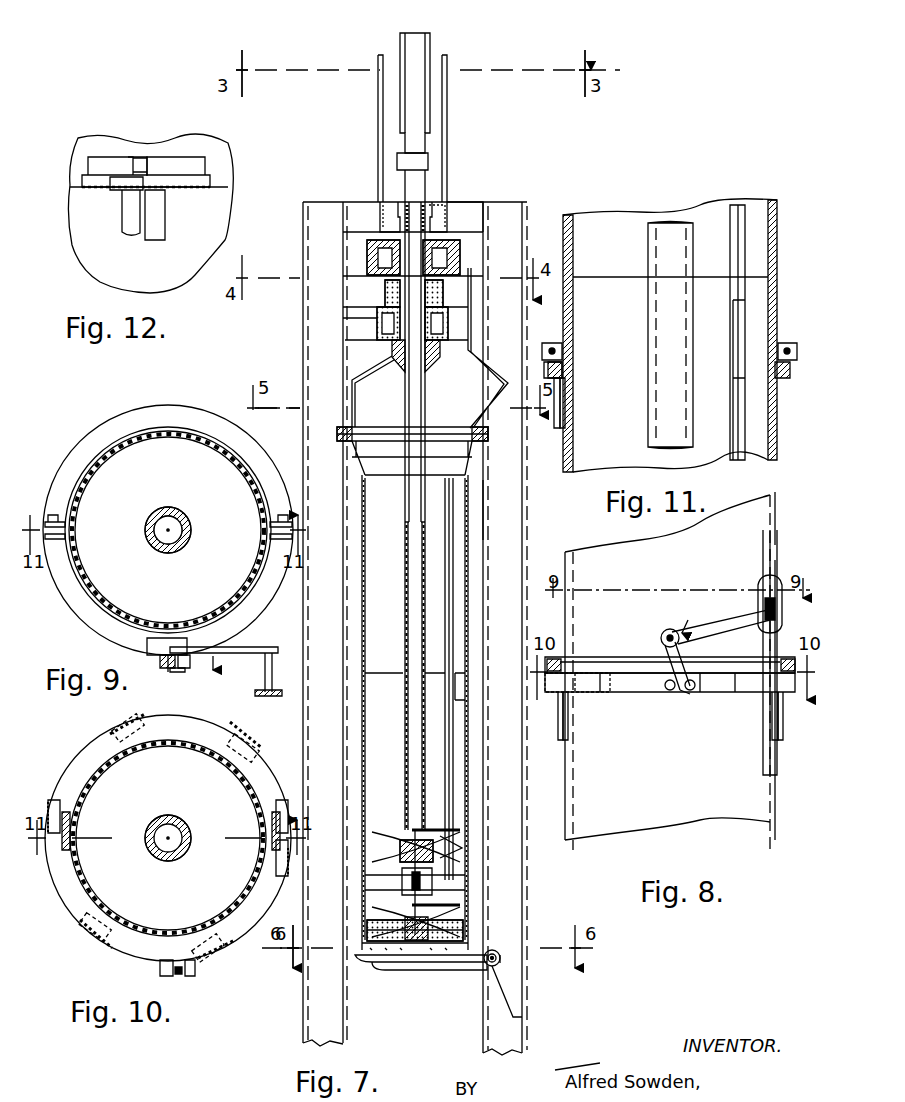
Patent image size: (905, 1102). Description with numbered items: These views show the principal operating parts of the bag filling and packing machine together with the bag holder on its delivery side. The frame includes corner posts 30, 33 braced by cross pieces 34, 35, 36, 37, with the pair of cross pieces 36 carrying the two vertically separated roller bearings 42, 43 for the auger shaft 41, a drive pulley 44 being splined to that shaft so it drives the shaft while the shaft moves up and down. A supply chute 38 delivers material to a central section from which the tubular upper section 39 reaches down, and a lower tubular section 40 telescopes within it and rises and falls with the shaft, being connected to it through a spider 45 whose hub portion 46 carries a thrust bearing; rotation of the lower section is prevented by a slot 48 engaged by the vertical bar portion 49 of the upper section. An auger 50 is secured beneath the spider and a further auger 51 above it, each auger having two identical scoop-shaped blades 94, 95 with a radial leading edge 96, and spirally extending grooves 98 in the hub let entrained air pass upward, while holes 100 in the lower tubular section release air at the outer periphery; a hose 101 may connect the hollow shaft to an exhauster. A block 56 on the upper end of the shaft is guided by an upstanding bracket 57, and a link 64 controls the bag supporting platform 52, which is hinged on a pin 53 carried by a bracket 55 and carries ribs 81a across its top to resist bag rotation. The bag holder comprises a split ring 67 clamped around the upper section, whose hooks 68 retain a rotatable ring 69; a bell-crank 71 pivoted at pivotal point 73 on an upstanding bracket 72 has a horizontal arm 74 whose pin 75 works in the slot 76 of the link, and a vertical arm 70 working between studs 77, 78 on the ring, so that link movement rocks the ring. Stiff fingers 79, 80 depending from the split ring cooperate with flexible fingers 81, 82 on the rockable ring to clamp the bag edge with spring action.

In FIG. 7, the corner post 30 is at (343, 325).
In FIG. 7, the corner post 33 is at (506, 508).
In FIG. 7, the cross piece 34 is at (470, 212).
In FIG. 7, the cross piece 35 is at (355, 318).
In FIG. 7, the cross piece 36 is at (447, 220).
In FIG. 7, the cross piece 37 is at (448, 325).
In FIG. 7, the supply chute 38 is at (430, 348).
In FIG. 7, the tubular upper section 39 is at (468, 568).
In FIG. 12, the tubular upper section 39 is at (85, 145).
In FIG. 9, the tubular upper section 39 is at (90, 597).
In FIG. 11, the tubular upper section 39 is at (777, 240).
In FIG. 8, the tubular upper section 39 is at (610, 552).
In FIG. 7, the lower tubular section 40 is at (466, 770).
In FIG. 12, the lower tubular section 40 is at (85, 258).
In FIG. 9, the lower tubular section 40 is at (88, 575).
In FIG. 10, the lower tubular section 40 is at (80, 852).
In FIG. 11, the lower tubular section 40 is at (772, 438).
In FIG. 8, the lower tubular section 40 is at (735, 812).
In FIG. 7, the auger shaft 41 is at (405, 413).
In FIG. 9, the auger shaft 41 is at (145, 530).
In FIG. 10, the auger shaft 41 is at (192, 826).
In FIG. 11, the auger shaft 41 is at (652, 396).
In FIG. 7, the roller bearing 42 is at (385, 298).
In FIG. 7, the roller bearing 43 is at (392, 360).
In FIG. 7, the drive pulley 44 is at (462, 258).
In FIG. 7, the spider 45 is at (455, 880).
In FIG. 7, the hub portion 46 is at (402, 882).
In FIG. 7, the slot 48 is at (447, 740).
In FIG. 9, the slot 48 is at (232, 465).
In FIG. 10, the slot 48 is at (232, 770).
In FIG. 11, the slot 48 is at (745, 405).
In FIG. 7, the vertical bar portion 49 is at (447, 650).
In FIG. 11, the vertical bar portion 49 is at (745, 232).
In FIG. 7, the auger 50 is at (465, 920).
In FIG. 7, the further auger 51 is at (460, 840).
In FIG. 7, the bag supporting platform 52 is at (388, 975).
In FIG. 7, the transverse hinge or pin 53 is at (500, 962).
In FIG. 7, the bracket 55 is at (508, 990).
In FIG. 7, the block 56 is at (397, 163).
In FIG. 7, the upstanding bracket 57 is at (447, 125).
In FIG. 9, the link 64 is at (262, 694).
In FIG. 8, the link 64 is at (763, 752).
In FIG. 12, the split ring 67 is at (195, 160).
In FIG. 9, the split ring 67 is at (88, 457).
In FIG. 11, the split ring 67 is at (790, 343).
In FIG. 8, the split ring 67 is at (608, 657).
In FIG. 12, the hook 68 is at (118, 190).
In FIG. 10, the hook 68 is at (120, 718).
In FIG. 11, the hook 68 is at (556, 366).
In FIG. 8, the hook 68 is at (598, 692).
In FIG. 12, the rotatable ring 69 is at (98, 185).
In FIG. 10, the rotatable ring 69 is at (90, 770).
In FIG. 11, the rotatable ring 69 is at (790, 378).
In FIG. 8, the rotatable ring 69 is at (640, 692).
In FIG. 9, the vertical arm 70 is at (176, 668).
In FIG. 10, the vertical arm 70 is at (180, 976).
In FIG. 8, the vertical arm 70 is at (682, 665).
In FIG. 9, the bell-crank 71 is at (219, 671).
In FIG. 8, the bell-crank 71 is at (694, 615).
In FIG. 9, the upstanding bracket 72 is at (150, 642).
In FIG. 8, the upstanding bracket 72 is at (660, 648).
In FIG. 9, the pivotal point 73 is at (165, 660).
In FIG. 8, the pivotal point 73 is at (660, 630).
In FIG. 9, the horizontal arm 74 is at (232, 652).
In FIG. 8, the horizontal arm 74 is at (726, 626).
In FIG. 9, the pin 75 is at (270, 675).
In FIG. 8, the pin 75 is at (778, 614).
In FIG. 8, the slot 76 is at (730, 595).
In FIG. 9, the stud 77 is at (163, 672).
In FIG. 10, the stud 77 is at (162, 970).
In FIG. 8, the stud 77 is at (670, 690).
In FIG. 9, the stud 78 is at (186, 664).
In FIG. 10, the stud 78 is at (196, 970).
In FIG. 8, the stud 78 is at (690, 692).
In FIG. 12, the stiff finger 79 is at (153, 240).
In FIG. 10, the stiff finger 79 is at (65, 850).
In FIG. 11, the stiff finger 79 is at (573, 426).
In FIG. 8, the stiff finger 79 is at (566, 740).
In FIG. 10, the stiff finger 80 is at (280, 816).
In FIG. 8, the stiff finger 80 is at (776, 743).
In FIG. 12, the flexible finger 81 is at (130, 232).
In FIG. 10, the flexible finger 81 is at (70, 822).
In FIG. 11, the flexible finger 81 is at (556, 428).
In FIG. 8, the flexible finger 81 is at (562, 728).
In FIG. 7, the ribs 81a is at (370, 950).
In FIG. 10, the flexible finger 82 is at (268, 856).
In FIG. 8, the flexible finger 82 is at (783, 725).
In FIG. 7, the blade 94 is at (396, 818).
In FIG. 7, the blade 95 is at (372, 914).
In FIG. 7, the radial leading edge 96 is at (458, 910).
In FIG. 7, the spirally extending grooves 98 is at (418, 950).
In FIG. 7, the holes 100 is at (470, 930).
In FIG. 7, the hose 101 is at (400, 100).